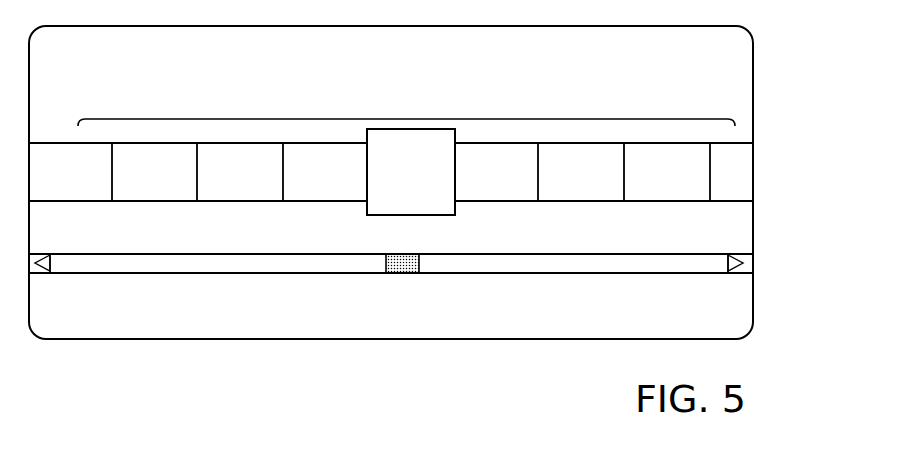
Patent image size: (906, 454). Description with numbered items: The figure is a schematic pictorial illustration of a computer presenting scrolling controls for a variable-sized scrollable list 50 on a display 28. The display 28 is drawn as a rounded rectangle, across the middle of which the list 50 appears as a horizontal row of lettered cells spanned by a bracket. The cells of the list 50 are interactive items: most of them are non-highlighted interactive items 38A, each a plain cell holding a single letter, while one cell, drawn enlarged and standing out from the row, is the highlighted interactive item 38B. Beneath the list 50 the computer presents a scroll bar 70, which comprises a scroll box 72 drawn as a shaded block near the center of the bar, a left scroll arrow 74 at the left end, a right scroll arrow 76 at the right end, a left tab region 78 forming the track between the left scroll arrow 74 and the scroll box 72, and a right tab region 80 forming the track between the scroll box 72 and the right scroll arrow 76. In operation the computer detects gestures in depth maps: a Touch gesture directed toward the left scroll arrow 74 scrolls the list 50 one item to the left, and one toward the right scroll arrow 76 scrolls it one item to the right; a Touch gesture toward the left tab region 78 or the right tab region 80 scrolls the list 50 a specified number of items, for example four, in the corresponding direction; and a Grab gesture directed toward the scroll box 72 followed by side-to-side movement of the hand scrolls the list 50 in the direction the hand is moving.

The display 28 is at (753, 57).
The variable-sized scrollable list 50 is at (410, 119).
The non-highlighted interactive items 38A is at (92, 201).
The highlighted interactive item 38B is at (374, 217).
The scroll bar 70 is at (504, 273).
The scroll box 72 is at (405, 273).
The left scroll arrow 74 is at (42, 273).
The right scroll arrow 76 is at (735, 273).
The left tab region 78 is at (268, 273).
The right tab region 80 is at (578, 268).